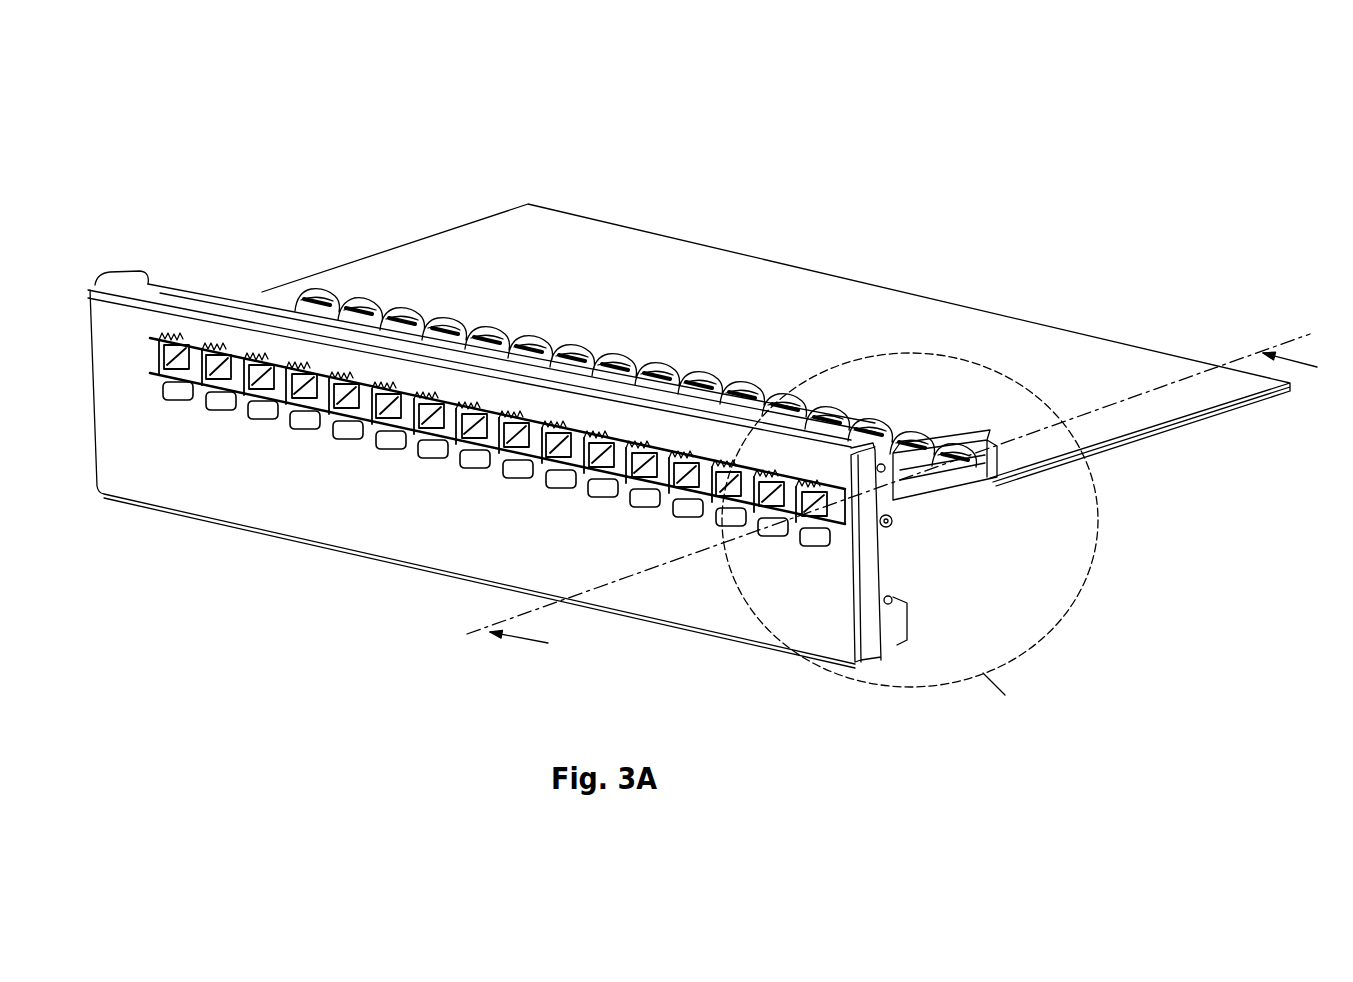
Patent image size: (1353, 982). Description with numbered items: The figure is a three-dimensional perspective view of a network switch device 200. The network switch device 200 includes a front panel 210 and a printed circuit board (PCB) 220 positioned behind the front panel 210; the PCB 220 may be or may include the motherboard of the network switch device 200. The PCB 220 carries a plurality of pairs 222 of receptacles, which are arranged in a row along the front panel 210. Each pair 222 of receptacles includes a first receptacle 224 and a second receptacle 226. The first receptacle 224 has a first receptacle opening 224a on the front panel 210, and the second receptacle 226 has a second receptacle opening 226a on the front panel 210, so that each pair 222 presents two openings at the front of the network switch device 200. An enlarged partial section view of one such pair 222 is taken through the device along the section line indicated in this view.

The network switch device 200 is at (112, 154).
The front panel 210 is at (157, 478).
The printed circuit board (PCB) 220 is at (783, 313).
The pair of receptacles 222 is at (1058, 496).
The first receptacle 224 is at (955, 463).
The first receptacle opening 224a is at (838, 510).
The second receptacle 226 is at (889, 526).
The second receptacle opening 226a is at (832, 540).